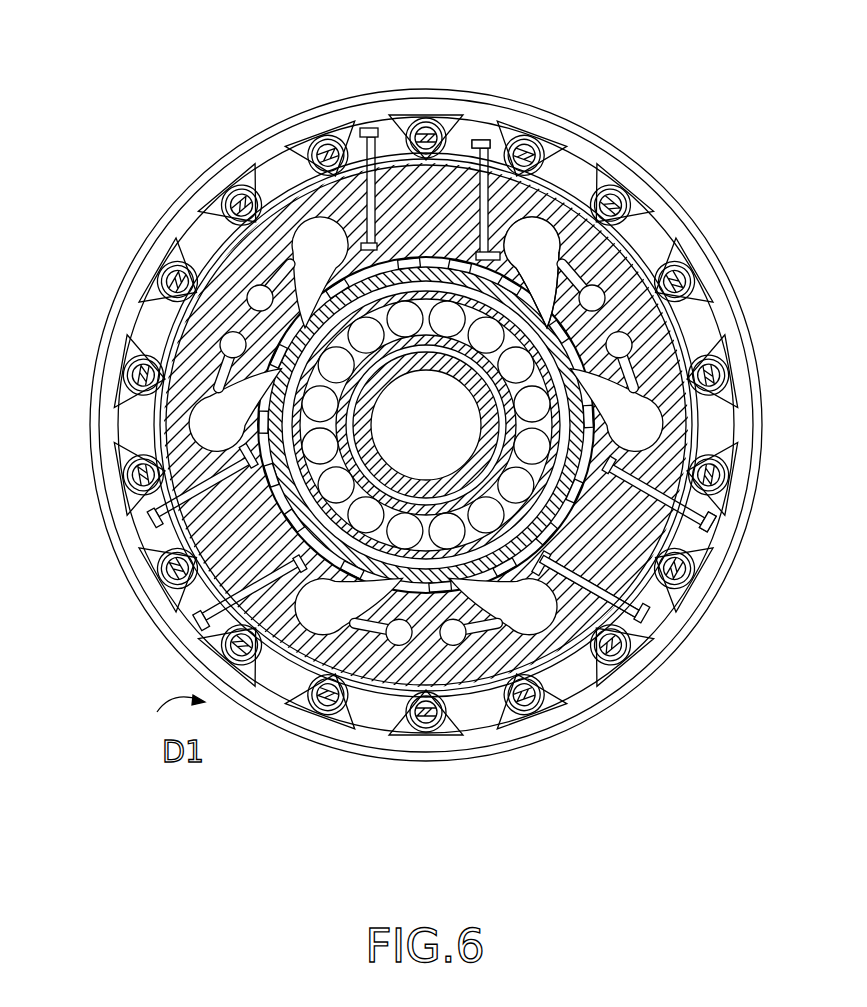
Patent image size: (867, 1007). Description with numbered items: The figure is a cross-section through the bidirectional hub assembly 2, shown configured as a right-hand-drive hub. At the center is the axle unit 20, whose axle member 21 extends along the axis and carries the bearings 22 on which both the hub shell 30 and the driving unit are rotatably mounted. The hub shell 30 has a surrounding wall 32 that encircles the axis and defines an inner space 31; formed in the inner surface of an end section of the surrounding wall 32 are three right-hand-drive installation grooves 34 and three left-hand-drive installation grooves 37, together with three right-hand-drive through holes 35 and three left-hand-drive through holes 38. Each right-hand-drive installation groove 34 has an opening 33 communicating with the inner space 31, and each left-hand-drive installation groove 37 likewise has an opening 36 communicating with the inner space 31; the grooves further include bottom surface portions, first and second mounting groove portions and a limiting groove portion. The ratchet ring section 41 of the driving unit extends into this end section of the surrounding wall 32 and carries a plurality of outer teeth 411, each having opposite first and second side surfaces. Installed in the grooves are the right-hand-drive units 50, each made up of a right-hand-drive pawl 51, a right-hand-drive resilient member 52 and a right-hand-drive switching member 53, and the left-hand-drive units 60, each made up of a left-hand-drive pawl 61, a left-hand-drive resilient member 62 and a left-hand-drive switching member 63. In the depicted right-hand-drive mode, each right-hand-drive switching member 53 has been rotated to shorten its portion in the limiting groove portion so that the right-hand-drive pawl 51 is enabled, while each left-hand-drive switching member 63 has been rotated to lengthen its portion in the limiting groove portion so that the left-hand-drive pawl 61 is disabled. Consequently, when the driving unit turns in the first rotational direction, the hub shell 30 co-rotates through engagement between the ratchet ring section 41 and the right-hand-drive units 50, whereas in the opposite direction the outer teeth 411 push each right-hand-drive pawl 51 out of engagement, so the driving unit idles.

The bidirectional hub assembly 2 is at (171, 160).
The axle unit 20 is at (275, 395).
The axle member 21 is at (357, 447).
The bearings 22 is at (293, 430).
The hub shell 30 is at (337, 90).
The inner space 31 is at (406, 254).
The surrounding wall 32 is at (418, 257).
The opening 33 is at (657, 288).
The right-hand-drive installation grooves 34 is at (688, 377).
The right-hand-drive through holes 35 is at (650, 575).
The opening 36 is at (618, 272).
The left-hand-drive installation grooves 37 is at (498, 260).
The left-hand-drive through holes 38 is at (455, 258).
The ratchet ring section 41 is at (152, 535).
The outer teeth 411 is at (210, 615).
The right-hand-drive units 50 is at (290, 208).
The right-hand-drive pawl 51 is at (700, 430).
The right-hand-drive resilient member 52 is at (673, 323).
The right-hand-drive switching member 53 is at (712, 527).
The left-hand-drive units 60 is at (539, 226).
The left-hand-drive pawl 61 is at (572, 248).
The left-hand-drive resilient member 62 is at (625, 255).
The left-hand-drive switching member 63 is at (484, 128).